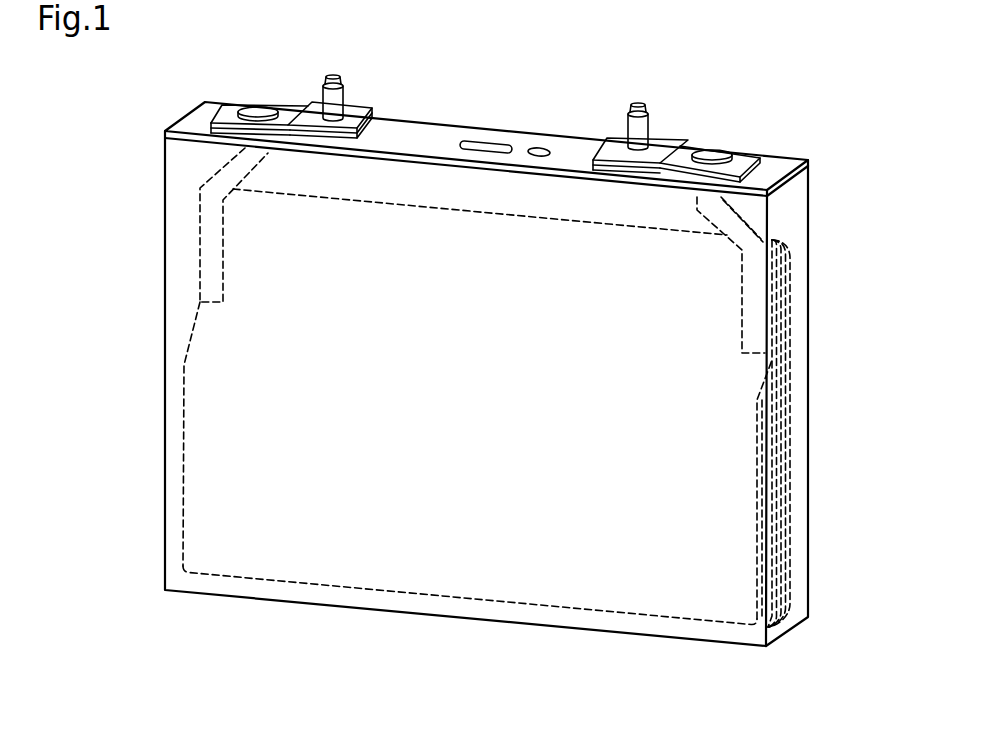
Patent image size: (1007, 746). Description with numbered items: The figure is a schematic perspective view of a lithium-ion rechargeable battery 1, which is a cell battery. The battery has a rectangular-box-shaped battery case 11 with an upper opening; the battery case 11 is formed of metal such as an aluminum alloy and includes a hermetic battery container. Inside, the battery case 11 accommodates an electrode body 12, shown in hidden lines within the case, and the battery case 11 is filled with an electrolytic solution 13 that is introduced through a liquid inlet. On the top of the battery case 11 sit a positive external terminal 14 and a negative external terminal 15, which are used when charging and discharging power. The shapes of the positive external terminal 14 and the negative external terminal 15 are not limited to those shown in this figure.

The lithium-ion rechargeable battery 1 is at (166, 100).
The battery case 11 is at (810, 290).
The electrode body 12 is at (183, 442).
The electrolytic solution 13 is at (282, 583).
The positive external terminal 14 is at (334, 74).
The negative external terminal 15 is at (639, 103).